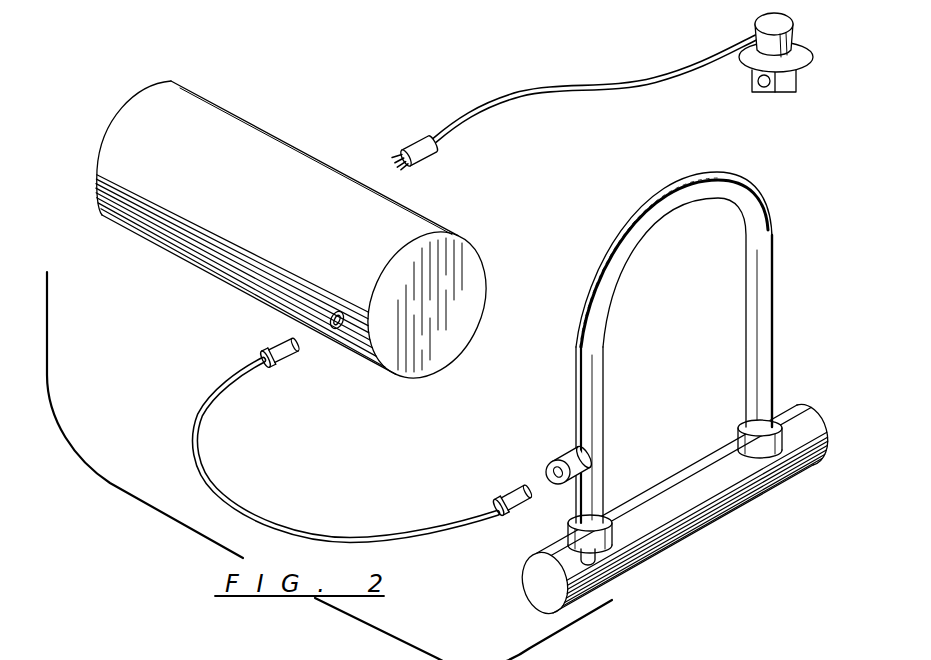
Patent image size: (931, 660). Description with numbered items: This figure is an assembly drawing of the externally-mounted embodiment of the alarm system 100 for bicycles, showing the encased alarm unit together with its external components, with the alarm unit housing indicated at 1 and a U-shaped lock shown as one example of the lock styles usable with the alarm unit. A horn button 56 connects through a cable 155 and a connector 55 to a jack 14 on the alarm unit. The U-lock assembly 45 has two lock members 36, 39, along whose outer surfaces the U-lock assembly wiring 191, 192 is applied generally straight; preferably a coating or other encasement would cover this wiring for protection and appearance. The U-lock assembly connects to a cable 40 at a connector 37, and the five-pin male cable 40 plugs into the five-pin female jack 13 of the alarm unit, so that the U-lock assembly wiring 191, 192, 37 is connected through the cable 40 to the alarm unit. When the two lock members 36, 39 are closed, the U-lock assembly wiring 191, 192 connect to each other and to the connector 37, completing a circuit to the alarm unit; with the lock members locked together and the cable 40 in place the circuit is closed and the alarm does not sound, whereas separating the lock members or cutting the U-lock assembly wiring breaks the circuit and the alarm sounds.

The housing 1 is at (245, 85).
The 5-pin female jack 13 is at (332, 332).
The jack 14 is at (373, 183).
The lock member 36 is at (635, 238).
The connector 37 is at (565, 455).
The lock member 39 is at (742, 497).
The cable 40 is at (270, 517).
The U-lock assembly 45 is at (815, 158).
The connector 55 is at (413, 147).
The horn button 56 is at (762, 23).
The alarm system 100 is at (210, 305).
The cable 155 is at (617, 85).
The U-lock assembly wiring 191 is at (585, 388).
The U-lock assembly wiring 192 is at (675, 518).